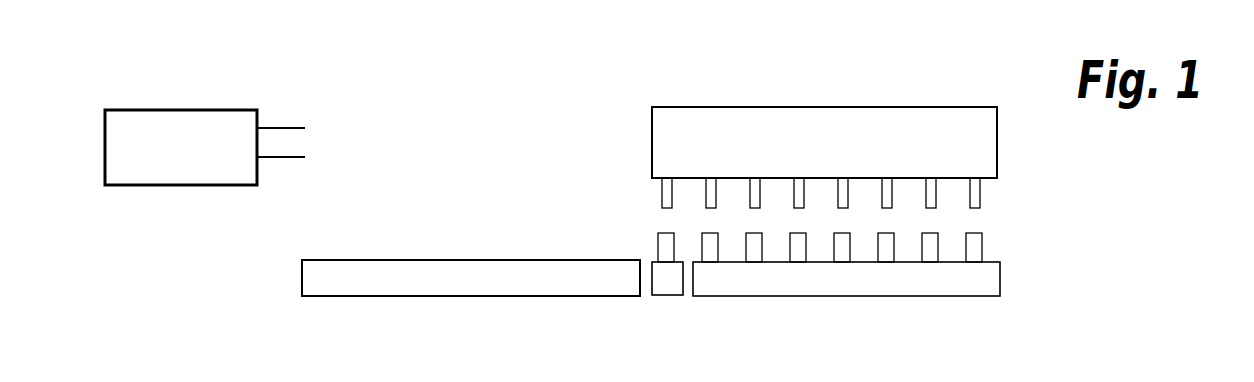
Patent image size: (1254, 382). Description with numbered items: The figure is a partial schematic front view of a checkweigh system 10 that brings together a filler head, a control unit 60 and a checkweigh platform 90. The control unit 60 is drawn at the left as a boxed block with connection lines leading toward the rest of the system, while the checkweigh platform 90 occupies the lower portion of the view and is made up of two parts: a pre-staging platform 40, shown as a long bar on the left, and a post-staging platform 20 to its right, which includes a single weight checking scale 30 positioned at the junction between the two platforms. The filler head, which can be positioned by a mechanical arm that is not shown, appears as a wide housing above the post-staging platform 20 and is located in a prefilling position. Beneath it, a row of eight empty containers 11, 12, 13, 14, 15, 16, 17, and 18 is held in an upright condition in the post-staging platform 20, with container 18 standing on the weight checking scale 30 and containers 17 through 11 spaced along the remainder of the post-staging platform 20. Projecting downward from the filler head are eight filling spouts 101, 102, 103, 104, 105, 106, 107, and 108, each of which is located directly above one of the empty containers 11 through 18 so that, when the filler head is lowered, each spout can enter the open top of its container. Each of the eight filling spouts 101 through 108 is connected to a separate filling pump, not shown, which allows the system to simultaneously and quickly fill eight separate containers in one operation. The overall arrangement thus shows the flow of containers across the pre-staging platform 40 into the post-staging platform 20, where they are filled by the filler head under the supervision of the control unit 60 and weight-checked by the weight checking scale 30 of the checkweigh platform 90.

The checkweigh system 10 is at (476, 146).
The empty container 11 is at (974, 250).
The empty container 12 is at (930, 250).
The empty container 13 is at (886, 250).
The empty container 14 is at (842, 250).
The empty container 15 is at (798, 250).
The empty container 16 is at (754, 250).
The empty container 17 is at (710, 250).
The empty container 18 is at (670, 248).
The post-staging platform 20 is at (1007, 302).
The weight checking scale 30 is at (652, 262).
The pre-staging platform 40 is at (512, 297).
The control unit 60 is at (258, 114).
The checkweigh platform 90 is at (1052, 249).
The filling spout 101 is at (667, 178).
The filling spout 102 is at (711, 178).
The filling spout 103 is at (755, 178).
The filling spout 104 is at (799, 178).
The filling spout 105 is at (843, 178).
The filling spout 106 is at (887, 178).
The filling spout 107 is at (931, 178).
The filling spout 108 is at (975, 178).